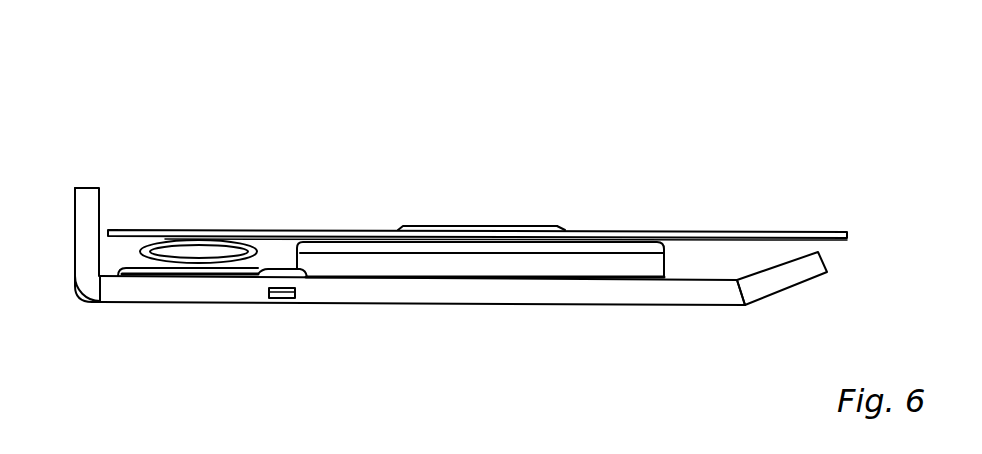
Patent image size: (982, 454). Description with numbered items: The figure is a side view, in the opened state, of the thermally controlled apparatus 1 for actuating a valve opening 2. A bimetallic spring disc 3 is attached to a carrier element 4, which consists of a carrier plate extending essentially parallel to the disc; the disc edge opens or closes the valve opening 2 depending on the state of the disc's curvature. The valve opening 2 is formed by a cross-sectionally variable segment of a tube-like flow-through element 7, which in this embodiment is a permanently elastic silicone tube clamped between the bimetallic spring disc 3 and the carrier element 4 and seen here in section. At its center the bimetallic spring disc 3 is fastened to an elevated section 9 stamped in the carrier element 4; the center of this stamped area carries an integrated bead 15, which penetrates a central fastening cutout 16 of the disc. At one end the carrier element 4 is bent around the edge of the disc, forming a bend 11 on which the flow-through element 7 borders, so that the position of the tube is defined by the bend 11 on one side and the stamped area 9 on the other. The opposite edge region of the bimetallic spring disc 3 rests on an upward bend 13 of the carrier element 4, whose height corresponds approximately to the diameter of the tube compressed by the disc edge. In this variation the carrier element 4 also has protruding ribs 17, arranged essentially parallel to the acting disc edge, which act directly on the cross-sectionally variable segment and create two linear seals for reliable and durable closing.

The thermally controlled apparatus 1 is at (168, 84).
The valve opening 2 is at (192, 252).
The bimetallic spring disc 3 is at (735, 233).
The carrier element 4 is at (678, 292).
The flow-through element 7 is at (222, 263).
The elevated section 9 is at (563, 265).
The bend 11 is at (83, 207).
The upward bend 13 is at (782, 278).
The integrated bead 15 is at (472, 228).
The central fastening cutout 16 is at (555, 230).
The protruding ribs 17 is at (278, 297).